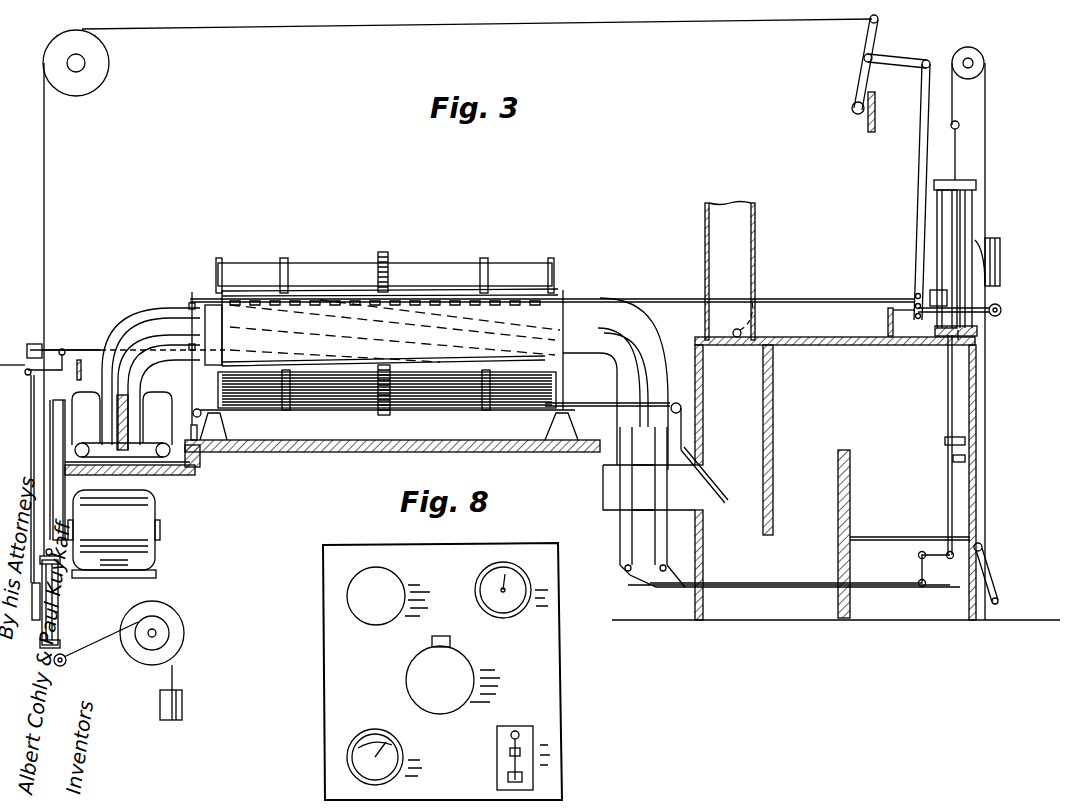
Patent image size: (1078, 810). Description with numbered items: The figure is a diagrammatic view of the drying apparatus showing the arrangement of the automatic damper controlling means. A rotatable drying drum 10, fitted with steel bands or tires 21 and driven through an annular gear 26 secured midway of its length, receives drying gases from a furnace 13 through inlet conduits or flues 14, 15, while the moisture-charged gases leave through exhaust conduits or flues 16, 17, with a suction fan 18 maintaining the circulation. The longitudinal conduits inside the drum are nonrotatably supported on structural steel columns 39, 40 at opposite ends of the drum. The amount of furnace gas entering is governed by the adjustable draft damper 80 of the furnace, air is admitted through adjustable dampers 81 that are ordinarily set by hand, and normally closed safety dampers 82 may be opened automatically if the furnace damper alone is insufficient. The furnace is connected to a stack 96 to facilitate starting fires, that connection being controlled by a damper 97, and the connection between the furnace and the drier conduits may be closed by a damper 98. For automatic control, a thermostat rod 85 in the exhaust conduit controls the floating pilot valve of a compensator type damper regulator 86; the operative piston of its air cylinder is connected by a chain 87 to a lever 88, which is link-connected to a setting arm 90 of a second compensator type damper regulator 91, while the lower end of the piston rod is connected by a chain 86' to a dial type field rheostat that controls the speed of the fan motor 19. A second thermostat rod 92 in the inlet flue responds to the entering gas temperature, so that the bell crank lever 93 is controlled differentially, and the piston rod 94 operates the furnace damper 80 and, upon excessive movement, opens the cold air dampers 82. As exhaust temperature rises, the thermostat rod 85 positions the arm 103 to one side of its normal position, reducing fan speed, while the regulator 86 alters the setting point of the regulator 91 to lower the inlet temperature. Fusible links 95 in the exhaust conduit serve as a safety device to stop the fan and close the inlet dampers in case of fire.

The chain 87 is at (236, 29).
The lever 88 is at (862, 46).
The setting arm 90 is at (922, 138).
The second compensator type damper regulator 91 is at (968, 205).
The second thermostat rod 92 is at (800, 288).
The bell crank lever 93 is at (955, 310).
The piston rod 94 is at (955, 405).
The stack 96 is at (752, 262).
The damper 97 is at (738, 345).
The furnace 13 is at (831, 478).
The adjustable draft damper 80 is at (998, 585).
The conduit or flue 14 is at (630, 310).
The structural steel column 40 is at (563, 372).
The conduit or flue 15 is at (618, 404).
The damper 98 is at (718, 490).
The adjustable dampers 81 is at (618, 450).
The safety dampers 82 is at (660, 578).
The rotatable drying drum 10 is at (330, 270).
The steel bands or tires 21 is at (286, 262).
The annular gear 26 is at (390, 258).
The structural steel column 39 is at (215, 393).
The fusible links 95 is at (190, 298).
The conduit or flue 16 is at (128, 312).
The conduit or flue 17 is at (130, 345).
The thermostat rod 85 is at (82, 350).
The arm 103 is at (17, 469).
The suction fan 18 is at (85, 408).
The fan motor 19 is at (140, 502).
The compensator type damper regulator 86 is at (69, 598).
The chain 86' is at (119, 660).